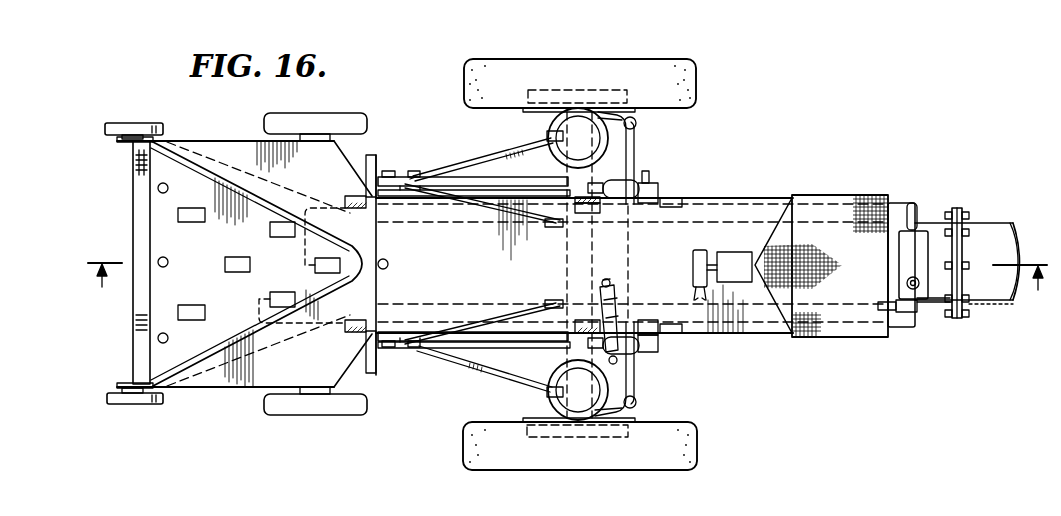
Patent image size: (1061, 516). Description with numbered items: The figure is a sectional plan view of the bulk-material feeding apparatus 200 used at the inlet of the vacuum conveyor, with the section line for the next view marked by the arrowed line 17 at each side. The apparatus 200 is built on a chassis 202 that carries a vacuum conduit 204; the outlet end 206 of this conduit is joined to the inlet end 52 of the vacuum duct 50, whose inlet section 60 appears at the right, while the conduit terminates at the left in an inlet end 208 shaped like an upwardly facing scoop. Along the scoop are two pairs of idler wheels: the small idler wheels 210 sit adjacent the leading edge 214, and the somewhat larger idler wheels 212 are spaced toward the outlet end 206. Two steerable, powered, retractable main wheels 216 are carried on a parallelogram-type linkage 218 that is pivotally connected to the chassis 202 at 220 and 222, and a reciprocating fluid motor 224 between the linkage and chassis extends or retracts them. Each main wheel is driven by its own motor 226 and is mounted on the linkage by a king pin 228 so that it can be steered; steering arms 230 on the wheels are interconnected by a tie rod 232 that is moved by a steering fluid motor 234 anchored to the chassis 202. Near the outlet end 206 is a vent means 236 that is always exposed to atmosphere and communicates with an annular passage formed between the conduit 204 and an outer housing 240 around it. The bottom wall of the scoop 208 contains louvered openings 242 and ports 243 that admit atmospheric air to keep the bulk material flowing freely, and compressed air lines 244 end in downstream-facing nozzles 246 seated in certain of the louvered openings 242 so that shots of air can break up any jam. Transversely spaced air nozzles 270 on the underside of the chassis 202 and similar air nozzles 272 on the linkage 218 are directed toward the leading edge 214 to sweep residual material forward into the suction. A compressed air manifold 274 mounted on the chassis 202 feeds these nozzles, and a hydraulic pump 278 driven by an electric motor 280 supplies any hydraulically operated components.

The section line 17- 17 is at (570, 287).
The duct 50 is at (1005, 223).
The inlet end 52 is at (962, 208).
The inlet section 60 is at (1000, 233).
The apparatus 200 is at (800, 158).
The chassis 202 is at (695, 197).
The vacuum conduit 204 is at (898, 203).
The outlet end 206 is at (955, 320).
The inlet end 208 is at (150, 238).
The idler wheels 210 is at (110, 124).
The idler wheels 212 is at (306, 116).
The leading edge 214 is at (133, 334).
The main wheels 216 is at (697, 78).
The parallelogram-type linkage 218 is at (466, 367).
The pivotal connection 220 is at (395, 175).
The pivotal connection 222 is at (440, 175).
The fluid motor 224 is at (628, 185).
The motors 226 is at (634, 150).
The king pins 228 is at (590, 112).
The steering arms 230 is at (637, 118).
The tie rod 232 is at (634, 390).
The steering fluid motor 234 is at (616, 292).
The vent means 236 is at (845, 193).
The outer housing 240 is at (778, 335).
The louvered openings 242 is at (195, 208).
The ports 243 is at (167, 260).
The compressed air lines 244 is at (310, 195).
The nozzles 246 is at (323, 260).
The air nozzles 270 is at (372, 155).
The air nozzles 272 is at (555, 170).
The compressed air manifold 274 is at (918, 298).
The hydraulic pump 278 is at (698, 250).
The electric motor 280 is at (740, 252).